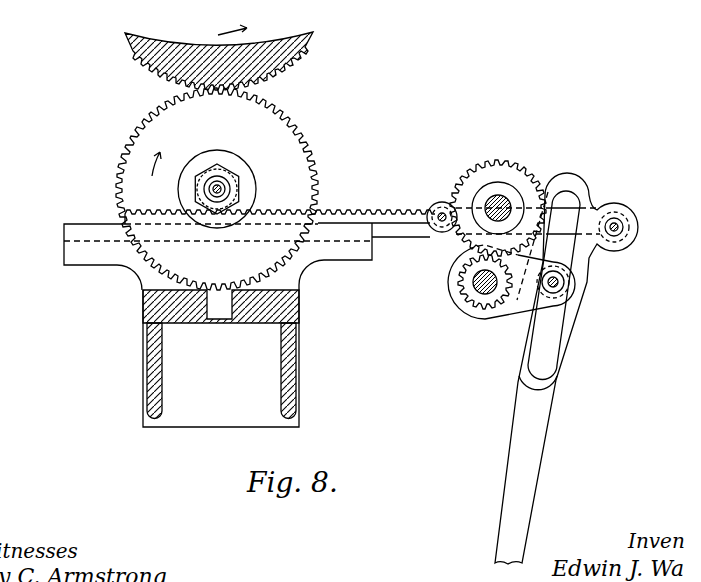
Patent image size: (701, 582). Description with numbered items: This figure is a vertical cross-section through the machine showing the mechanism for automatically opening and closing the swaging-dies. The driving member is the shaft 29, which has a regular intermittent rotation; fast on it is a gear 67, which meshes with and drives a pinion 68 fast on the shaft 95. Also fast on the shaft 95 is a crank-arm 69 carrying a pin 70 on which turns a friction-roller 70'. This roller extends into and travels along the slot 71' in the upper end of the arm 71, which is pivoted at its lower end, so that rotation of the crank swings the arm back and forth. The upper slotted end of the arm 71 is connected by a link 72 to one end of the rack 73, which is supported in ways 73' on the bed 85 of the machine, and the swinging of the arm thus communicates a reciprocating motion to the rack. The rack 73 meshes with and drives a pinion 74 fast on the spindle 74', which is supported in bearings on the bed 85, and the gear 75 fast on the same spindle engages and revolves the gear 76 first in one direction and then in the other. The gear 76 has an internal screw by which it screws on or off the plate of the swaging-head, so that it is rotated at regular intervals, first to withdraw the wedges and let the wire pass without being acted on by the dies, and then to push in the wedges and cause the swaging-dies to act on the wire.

The gear 76 is at (317, 38).
The gear 75 is at (300, 133).
The pinion 74 is at (235, 189).
The spindle 74' is at (196, 189).
The rack 73 is at (332, 205).
The ways 73' is at (217, 256).
The bed 85 is at (146, 297).
The gear 67 is at (510, 165).
The shaft 29 is at (505, 200).
The pinion 68 is at (470, 295).
The shaft 95 is at (482, 297).
The crank-arm 69 is at (502, 310).
The pin 70 is at (591, 283).
The friction-roller 70' is at (593, 292).
The link 72 is at (568, 225).
The arm 71 is at (567, 368).
The slot 71' is at (525, 289).